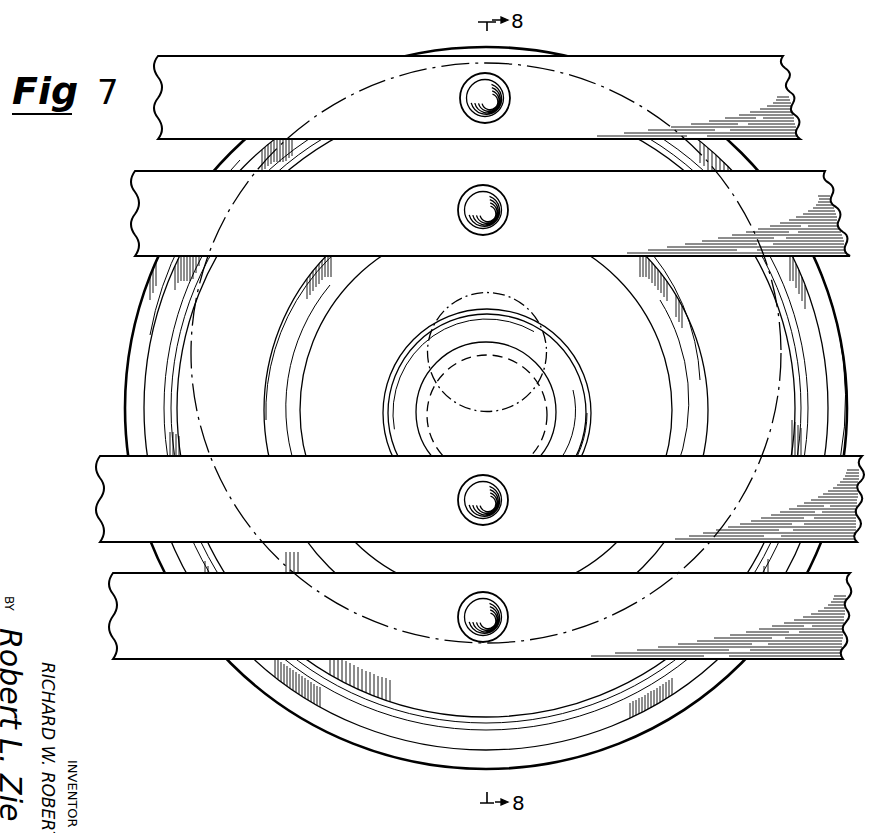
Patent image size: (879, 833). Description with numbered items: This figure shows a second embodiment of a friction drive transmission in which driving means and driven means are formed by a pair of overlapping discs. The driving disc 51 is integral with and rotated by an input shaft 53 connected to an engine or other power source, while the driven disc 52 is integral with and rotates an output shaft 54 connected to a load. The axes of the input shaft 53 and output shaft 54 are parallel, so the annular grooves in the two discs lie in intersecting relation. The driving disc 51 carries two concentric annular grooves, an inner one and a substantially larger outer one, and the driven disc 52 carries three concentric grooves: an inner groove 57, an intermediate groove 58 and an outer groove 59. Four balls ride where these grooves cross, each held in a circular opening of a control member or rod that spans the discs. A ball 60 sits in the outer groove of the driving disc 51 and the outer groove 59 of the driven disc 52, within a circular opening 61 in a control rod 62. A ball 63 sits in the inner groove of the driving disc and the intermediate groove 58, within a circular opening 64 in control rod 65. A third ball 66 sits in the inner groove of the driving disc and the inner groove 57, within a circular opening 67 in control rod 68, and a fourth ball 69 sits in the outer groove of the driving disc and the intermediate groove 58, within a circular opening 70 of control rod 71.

The driving disc 51 is at (186, 293).
The driven disc 52 is at (309, 728).
The input shaft 53 is at (530, 313).
The output shaft 54 is at (540, 432).
The inner groove 57 is at (573, 369).
The intermediate groove 58 is at (702, 374).
The outer groove 59 is at (385, 725).
The ball 60 is at (461, 98).
The circular opening 61 is at (510, 98).
The control member or rod 62 is at (158, 124).
The ball 63 is at (459, 210).
The circular opening 64 is at (508, 210).
The control member or rod 65 is at (135, 219).
The third ball 66 is at (459, 500).
The circular opening 67 is at (508, 500).
The control member or rod 68 is at (100, 490).
The fourth ball 69 is at (460, 614).
The circular opening 70 is at (508, 611).
The control member or rod 71 is at (113, 600).